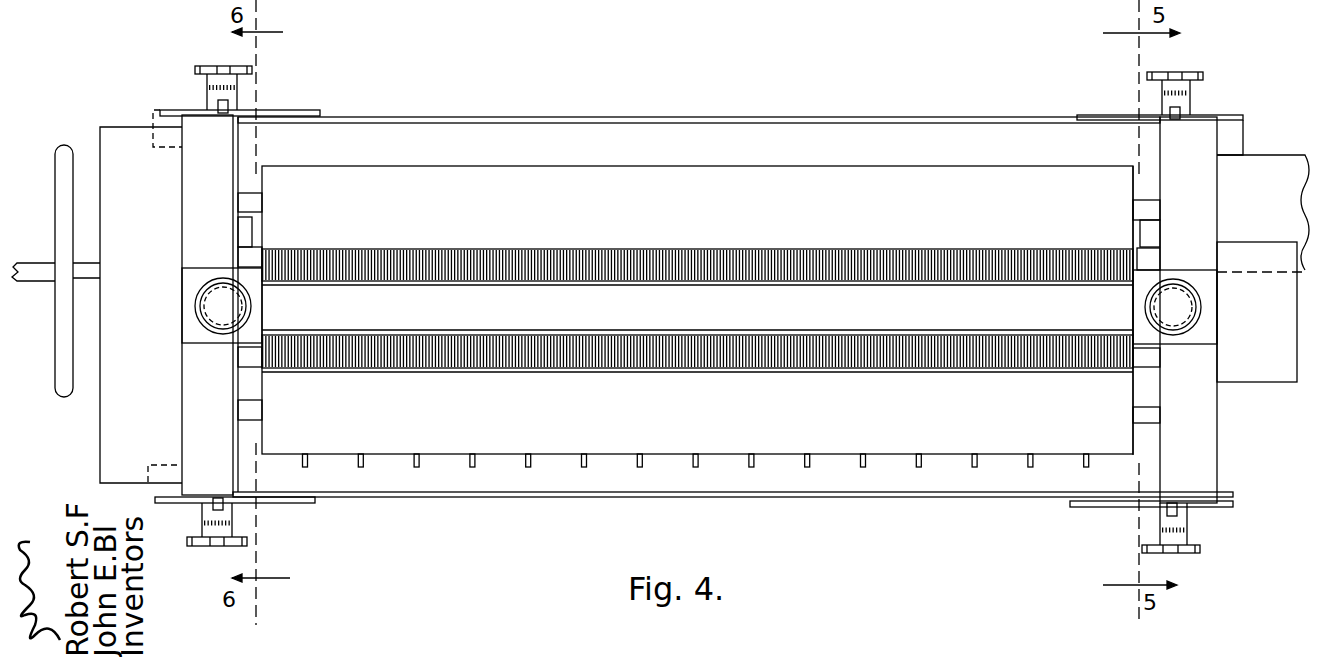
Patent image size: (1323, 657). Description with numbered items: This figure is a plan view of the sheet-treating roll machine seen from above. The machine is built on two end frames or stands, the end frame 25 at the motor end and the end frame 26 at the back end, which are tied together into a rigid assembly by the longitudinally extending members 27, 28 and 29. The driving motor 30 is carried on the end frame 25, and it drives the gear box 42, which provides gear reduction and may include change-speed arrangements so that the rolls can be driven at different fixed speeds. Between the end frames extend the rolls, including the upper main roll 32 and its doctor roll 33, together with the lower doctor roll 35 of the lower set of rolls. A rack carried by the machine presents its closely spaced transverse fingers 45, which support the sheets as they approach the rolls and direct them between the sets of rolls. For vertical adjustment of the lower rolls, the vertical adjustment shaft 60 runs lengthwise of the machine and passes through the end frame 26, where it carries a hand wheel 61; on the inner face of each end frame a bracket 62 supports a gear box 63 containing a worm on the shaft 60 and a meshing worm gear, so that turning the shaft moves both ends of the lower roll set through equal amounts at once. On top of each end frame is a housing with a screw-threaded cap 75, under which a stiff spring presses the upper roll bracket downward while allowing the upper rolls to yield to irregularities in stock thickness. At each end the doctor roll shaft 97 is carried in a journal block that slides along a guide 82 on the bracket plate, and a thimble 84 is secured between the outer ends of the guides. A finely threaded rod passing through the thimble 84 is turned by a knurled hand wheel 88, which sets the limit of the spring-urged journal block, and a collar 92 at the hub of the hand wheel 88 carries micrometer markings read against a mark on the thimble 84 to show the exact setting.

The end frame 25 is at (1220, 432).
The end frame 26 is at (180, 424).
The longitudinally extending member 27 is at (697, 328).
The longitudinally extending member 28 is at (606, 498).
The longitudinally extending member 29 is at (610, 117).
The driving motor 30 is at (1260, 312).
The main roll 32 is at (442, 262).
The doctor roll 33 is at (507, 437).
The doctor roll 35 is at (720, 198).
The gear box 42 is at (1263, 212).
The transverse fingers 45 is at (470, 468).
The vertical adjustment shaft 60 is at (95, 263).
The hand wheel 61 is at (67, 146).
The bracket 62 is at (250, 228).
The gear box 63 is at (242, 255).
The cap 75 is at (196, 316).
The guide 82 is at (226, 105).
The thimble 84 is at (205, 100).
The hand wheel 88 is at (212, 66).
The collar 92 is at (207, 80).
The doctor roll shaft 97 is at (248, 203).